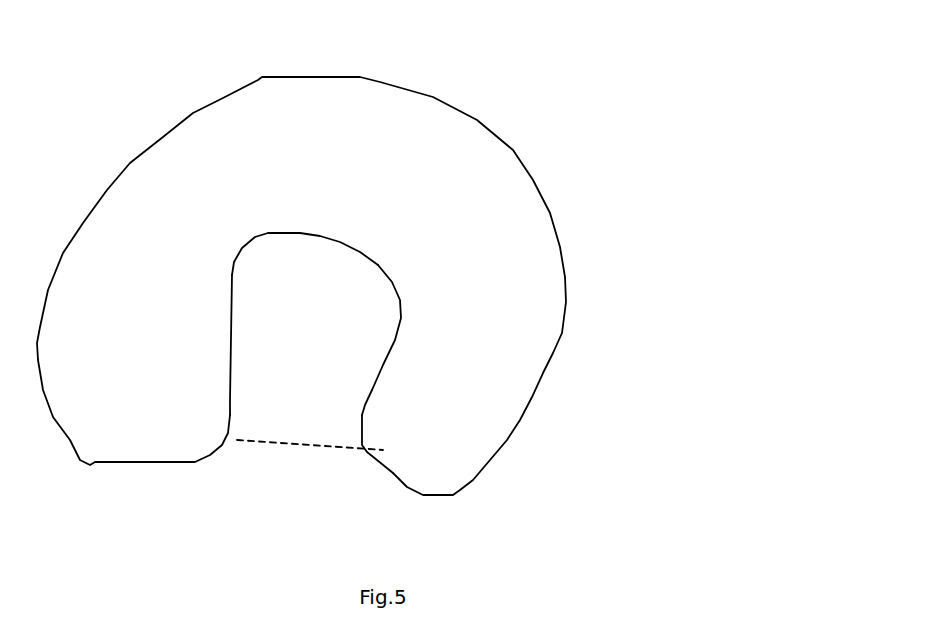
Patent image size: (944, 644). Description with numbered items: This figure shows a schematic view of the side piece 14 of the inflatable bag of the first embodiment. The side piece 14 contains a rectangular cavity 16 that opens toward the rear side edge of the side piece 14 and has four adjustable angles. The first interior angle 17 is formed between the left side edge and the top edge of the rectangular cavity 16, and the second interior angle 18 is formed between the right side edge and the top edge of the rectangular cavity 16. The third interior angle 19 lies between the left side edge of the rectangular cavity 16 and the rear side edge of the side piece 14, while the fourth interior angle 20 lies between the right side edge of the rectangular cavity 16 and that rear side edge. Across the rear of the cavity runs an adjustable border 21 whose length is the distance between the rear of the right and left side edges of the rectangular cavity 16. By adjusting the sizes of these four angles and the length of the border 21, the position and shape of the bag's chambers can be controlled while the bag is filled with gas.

The side piece 14 is at (472, 178).
The rectangular cavity 16 is at (347, 292).
The first interior angle 17 is at (261, 262).
The second interior angle 18 is at (374, 326).
The third interior angle 19 is at (193, 432).
The fourth interior angle 20 is at (382, 433).
The adjustable border 21 is at (286, 454).